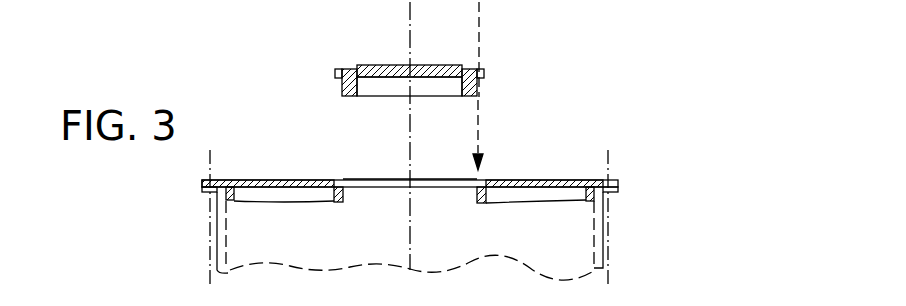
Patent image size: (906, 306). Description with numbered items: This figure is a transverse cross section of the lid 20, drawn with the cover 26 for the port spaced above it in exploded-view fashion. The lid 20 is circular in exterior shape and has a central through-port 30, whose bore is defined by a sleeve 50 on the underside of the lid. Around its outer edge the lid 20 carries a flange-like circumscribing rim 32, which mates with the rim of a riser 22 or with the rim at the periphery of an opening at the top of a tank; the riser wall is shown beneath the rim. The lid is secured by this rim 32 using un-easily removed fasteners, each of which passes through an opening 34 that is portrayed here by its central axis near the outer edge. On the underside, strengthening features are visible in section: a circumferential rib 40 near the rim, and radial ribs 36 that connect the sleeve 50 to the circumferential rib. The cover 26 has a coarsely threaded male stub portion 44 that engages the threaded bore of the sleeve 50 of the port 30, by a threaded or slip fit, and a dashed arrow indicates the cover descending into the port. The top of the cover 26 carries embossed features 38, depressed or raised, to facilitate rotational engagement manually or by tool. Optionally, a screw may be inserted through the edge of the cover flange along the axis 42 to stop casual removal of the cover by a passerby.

The lid 20 is at (410, 190).
The riser 22 is at (606, 246).
The cover 26 is at (421, 56).
The central through-port 30 is at (341, 202).
The circumscribing rim 32 is at (222, 180).
The opening 34 is at (610, 157).
The radial rib 36 is at (283, 199).
The embossed feature 38 is at (372, 65).
The circumferential rib 40 is at (232, 201).
The axis 42 is at (482, 21).
The male stub portion 44 is at (342, 88).
The sleeve 50 is at (481, 205).